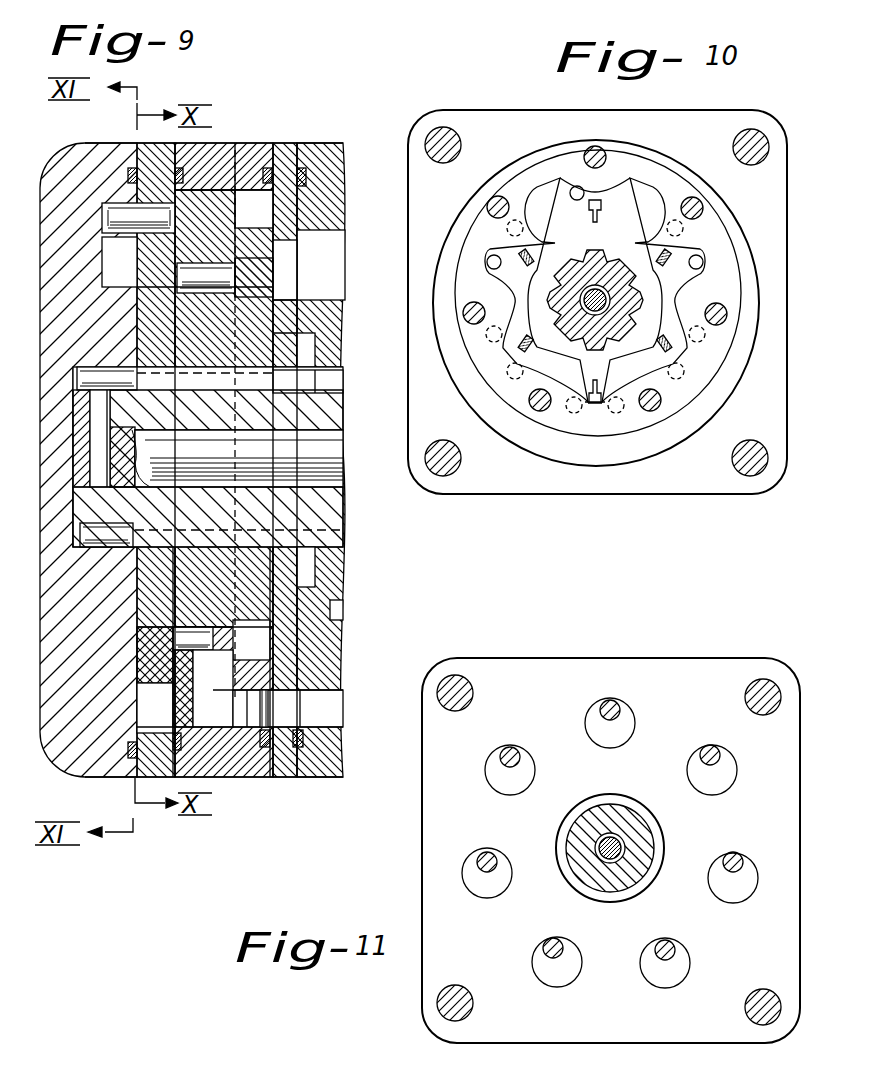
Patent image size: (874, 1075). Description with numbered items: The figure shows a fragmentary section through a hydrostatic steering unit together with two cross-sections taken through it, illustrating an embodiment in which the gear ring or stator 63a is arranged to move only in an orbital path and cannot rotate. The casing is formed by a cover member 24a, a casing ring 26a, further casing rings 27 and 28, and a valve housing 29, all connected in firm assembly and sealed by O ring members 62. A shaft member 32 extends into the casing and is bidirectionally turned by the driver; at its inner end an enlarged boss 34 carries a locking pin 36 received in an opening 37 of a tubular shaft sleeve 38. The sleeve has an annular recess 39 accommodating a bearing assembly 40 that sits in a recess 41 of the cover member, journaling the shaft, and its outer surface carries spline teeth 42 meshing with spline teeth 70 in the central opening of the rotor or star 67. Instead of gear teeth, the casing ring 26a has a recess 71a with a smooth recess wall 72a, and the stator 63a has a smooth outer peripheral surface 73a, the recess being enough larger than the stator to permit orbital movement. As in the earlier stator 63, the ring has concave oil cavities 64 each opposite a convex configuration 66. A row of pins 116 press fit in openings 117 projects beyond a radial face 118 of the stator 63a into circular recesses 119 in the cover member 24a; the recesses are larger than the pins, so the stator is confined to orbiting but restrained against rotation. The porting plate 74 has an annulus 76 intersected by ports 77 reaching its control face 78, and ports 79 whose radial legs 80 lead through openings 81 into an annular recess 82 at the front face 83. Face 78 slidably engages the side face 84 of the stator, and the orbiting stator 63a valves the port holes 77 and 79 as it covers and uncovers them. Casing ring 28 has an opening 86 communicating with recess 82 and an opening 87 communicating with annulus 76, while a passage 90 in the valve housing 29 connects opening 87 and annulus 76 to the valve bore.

In FIG. 9, the cover member 24a is at (60, 765).
In FIG. 11, the cover member 24a is at (438, 880).
In FIG. 9, the casing ring 26a is at (137, 775).
In FIG. 10, the casing ring 26a is at (573, 467).
In FIG. 9, the casing ring 27 is at (247, 740).
In FIG. 9, the casing ring 28 is at (305, 775).
In FIG. 9, the valve housing 29 is at (332, 778).
In FIG. 9, the shaft member 32 is at (300, 453).
In FIG. 10, the shaft member 32 is at (606, 302).
In FIG. 11, the shaft member 32 is at (631, 860).
In FIG. 9, the enlarged boss 34 is at (85, 505).
In FIG. 9, the locking pin 36 is at (115, 455).
In FIG. 9, the opening 37 is at (97, 410).
In FIG. 9, the shaft sleeve 38 is at (80, 537).
In FIG. 11, the shaft sleeve 38 is at (580, 818).
In FIG. 10, the annular recess 39 is at (612, 273).
In FIG. 9, the bearing assembly 40 is at (80, 378).
In FIG. 11, the bearing assembly 40 is at (613, 795).
In FIG. 9, the recess 41 is at (75, 575).
In FIG. 11, the recess 41 is at (556, 848).
In FIG. 9, the spline teeth 42 is at (300, 385).
In FIG. 9, the O ring members 62 is at (302, 170).
In FIG. 9, the stator 63 is at (137, 633).
In FIG. 9, the stator 63a is at (105, 293).
In FIG. 10, the stator 63a is at (478, 217).
In FIG. 10, the concave configurations 64 is at (645, 182).
In FIG. 10, the convex configurations 66 is at (594, 192).
In FIG. 9, the rotor 67 is at (163, 350).
In FIG. 9, the spline teeth 70 is at (180, 408).
In FIG. 10, the recess 71a is at (532, 435).
In FIG. 10, the recess wall 72a is at (645, 435).
In FIG. 10, the smooth surface 73a is at (480, 380).
In FIG. 9, the porting plate 74 is at (275, 325).
In FIG. 9, the annulus 76 is at (273, 298).
In FIG. 9, the ports 77 is at (206, 278).
In FIG. 10, the ports 77 is at (571, 198).
In FIG. 9, the control face 78 is at (150, 312).
In FIG. 9, the ports 79 is at (178, 645).
In FIG. 10, the ports 79 is at (613, 193).
In FIG. 9, the radial leg 80 is at (235, 688).
In FIG. 9, the opening 81 is at (218, 700).
In FIG. 9, the annular recess 82 is at (262, 200).
In FIG. 9, the front face 83 is at (297, 242).
In FIG. 9, the side face 84 is at (203, 238).
In FIG. 9, the opening 86 is at (285, 707).
In FIG. 9, the opening 87 is at (297, 268).
In FIG. 9, the passage 90 is at (340, 255).
In FIG. 9, the pins 116 is at (118, 212).
In FIG. 10, the pins 116 is at (587, 160).
In FIG. 11, the pins 116 is at (510, 753).
In FIG. 9, the opening 117 is at (157, 426).
In FIG. 9, the radial face 118 is at (130, 282).
In FIG. 9, the recesses 119 is at (105, 250).
In FIG. 11, the recesses 119 is at (498, 777).